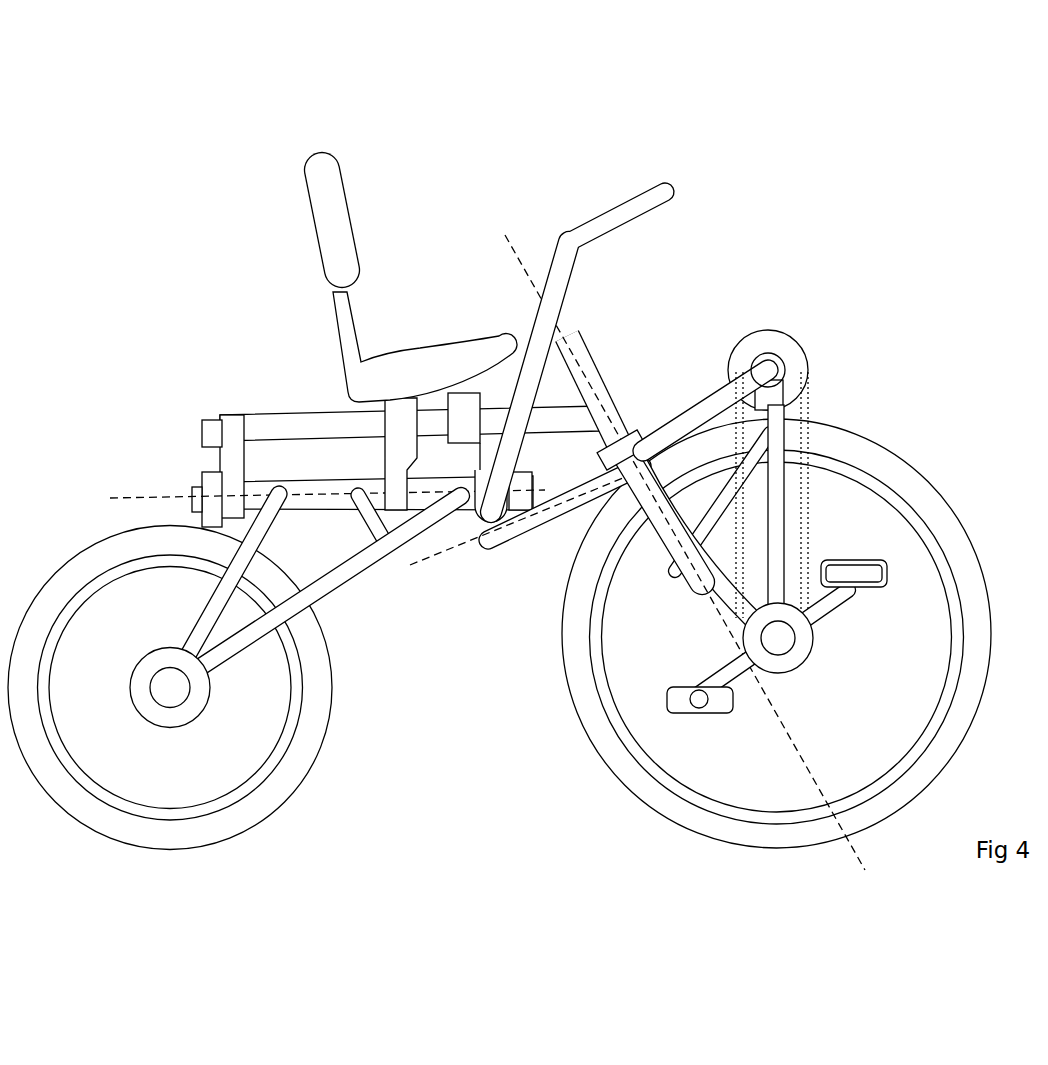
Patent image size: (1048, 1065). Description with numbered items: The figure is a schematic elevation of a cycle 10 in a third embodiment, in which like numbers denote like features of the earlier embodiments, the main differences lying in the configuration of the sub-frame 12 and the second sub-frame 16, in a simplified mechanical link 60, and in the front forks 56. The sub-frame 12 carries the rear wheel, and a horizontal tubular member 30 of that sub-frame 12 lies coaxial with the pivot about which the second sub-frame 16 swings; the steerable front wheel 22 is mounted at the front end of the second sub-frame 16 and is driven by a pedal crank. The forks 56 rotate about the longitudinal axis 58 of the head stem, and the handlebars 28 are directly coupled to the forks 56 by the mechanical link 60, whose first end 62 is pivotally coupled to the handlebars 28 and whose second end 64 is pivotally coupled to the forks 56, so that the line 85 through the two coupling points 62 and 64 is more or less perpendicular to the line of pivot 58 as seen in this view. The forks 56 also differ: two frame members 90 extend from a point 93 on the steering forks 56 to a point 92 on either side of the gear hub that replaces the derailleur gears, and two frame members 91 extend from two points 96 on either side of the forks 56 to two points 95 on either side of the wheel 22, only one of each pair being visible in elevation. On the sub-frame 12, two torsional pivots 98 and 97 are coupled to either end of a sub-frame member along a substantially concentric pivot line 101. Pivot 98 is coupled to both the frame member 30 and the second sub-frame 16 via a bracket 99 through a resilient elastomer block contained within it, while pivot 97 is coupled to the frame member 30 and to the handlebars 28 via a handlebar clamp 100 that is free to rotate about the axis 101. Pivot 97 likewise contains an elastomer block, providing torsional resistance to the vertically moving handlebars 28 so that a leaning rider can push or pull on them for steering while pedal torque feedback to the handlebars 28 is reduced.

The cycle 10 is at (528, 472).
The sub-frame 12 is at (355, 586).
The second sub-frame 16 is at (295, 409).
The steerable front wheel 22 is at (957, 552).
The handlebars 28 is at (580, 288).
The tubular member 30 is at (315, 510).
The forks 56 is at (667, 570).
The longitudinal axis 58 is at (510, 236).
The mechanical link 60 is at (563, 520).
The first end 62 is at (492, 545).
The second end 64 is at (685, 509).
The line 85 is at (440, 558).
The frame members 90 is at (708, 387).
The frame members 91 is at (786, 472).
The point 92 is at (797, 360).
The point 93 is at (747, 497).
The points 95 is at (786, 420).
The points 96 is at (673, 575).
The torsional pivot 97 is at (537, 463).
The torsional pivot 98 is at (196, 472).
The bracket 99 is at (212, 407).
The handlebar clamp 100 is at (480, 467).
The pivot line 101 is at (130, 497).